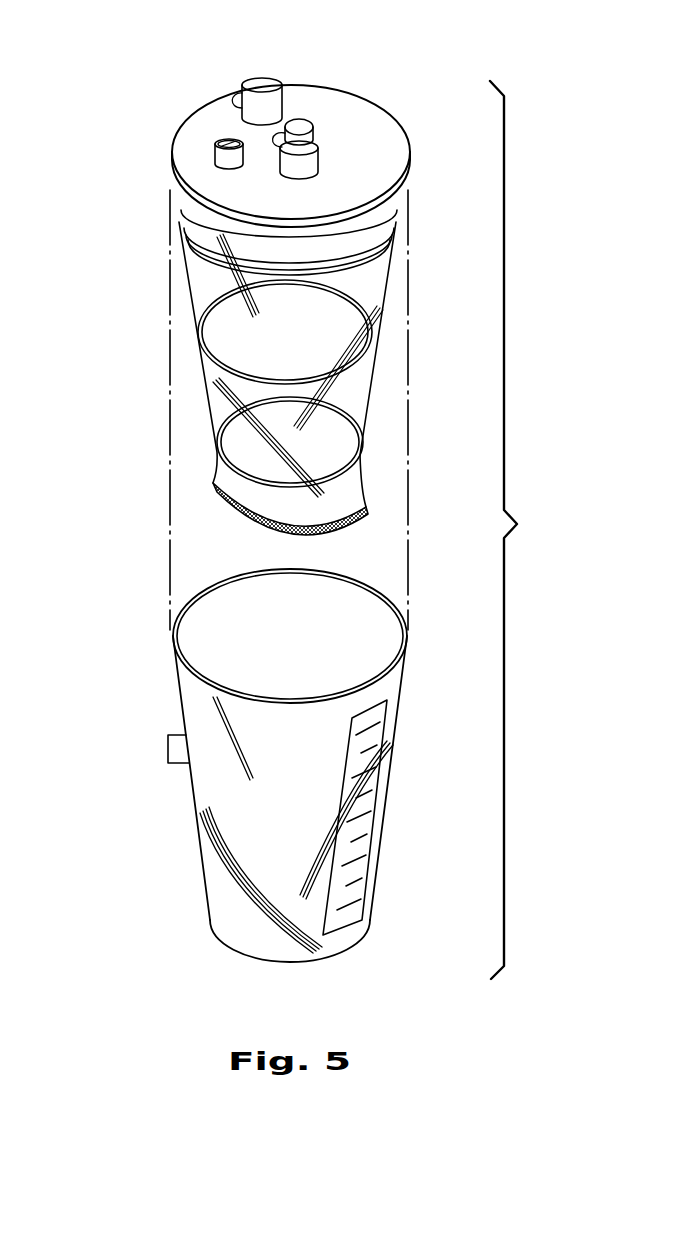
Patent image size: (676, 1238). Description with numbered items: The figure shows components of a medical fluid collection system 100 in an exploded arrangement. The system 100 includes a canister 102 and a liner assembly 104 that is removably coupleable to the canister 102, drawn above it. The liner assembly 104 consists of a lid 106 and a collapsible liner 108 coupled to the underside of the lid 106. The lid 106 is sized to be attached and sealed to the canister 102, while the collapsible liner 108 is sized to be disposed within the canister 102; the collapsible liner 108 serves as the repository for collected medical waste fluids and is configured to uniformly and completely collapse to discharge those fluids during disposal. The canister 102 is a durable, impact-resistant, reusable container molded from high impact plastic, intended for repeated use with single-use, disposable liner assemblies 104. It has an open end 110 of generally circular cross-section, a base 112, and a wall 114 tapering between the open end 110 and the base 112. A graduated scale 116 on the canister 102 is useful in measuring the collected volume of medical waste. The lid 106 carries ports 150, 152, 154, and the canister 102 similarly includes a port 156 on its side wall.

The medical fluid collection system 100 is at (526, 530).
The canister 102 is at (227, 657).
The liner assembly 104 is at (150, 385).
The lid 106 is at (197, 145).
The collapsible liner 108 is at (198, 292).
The open end 110 is at (172, 636).
The base 112 is at (228, 950).
The wall 114 is at (203, 848).
The graduated scale 116 is at (366, 848).
The port 150 is at (226, 163).
The port 152 is at (268, 110).
The port 154 is at (303, 163).
The port 156 is at (168, 750).